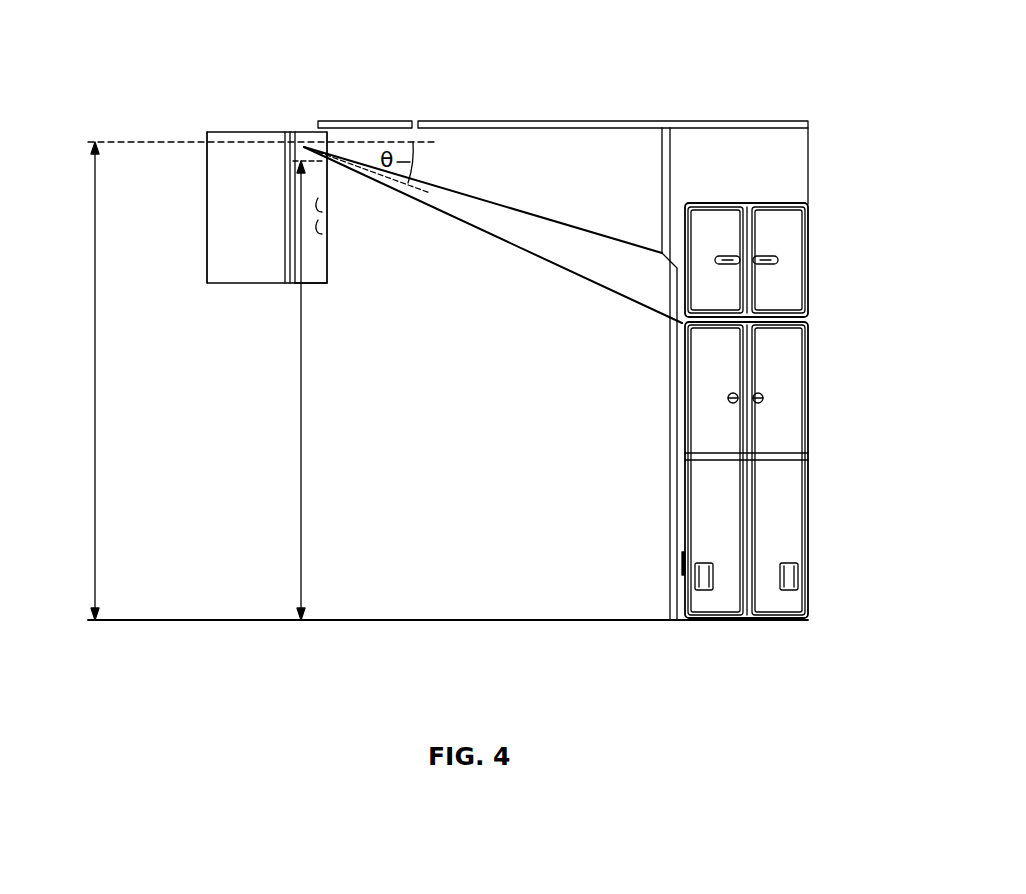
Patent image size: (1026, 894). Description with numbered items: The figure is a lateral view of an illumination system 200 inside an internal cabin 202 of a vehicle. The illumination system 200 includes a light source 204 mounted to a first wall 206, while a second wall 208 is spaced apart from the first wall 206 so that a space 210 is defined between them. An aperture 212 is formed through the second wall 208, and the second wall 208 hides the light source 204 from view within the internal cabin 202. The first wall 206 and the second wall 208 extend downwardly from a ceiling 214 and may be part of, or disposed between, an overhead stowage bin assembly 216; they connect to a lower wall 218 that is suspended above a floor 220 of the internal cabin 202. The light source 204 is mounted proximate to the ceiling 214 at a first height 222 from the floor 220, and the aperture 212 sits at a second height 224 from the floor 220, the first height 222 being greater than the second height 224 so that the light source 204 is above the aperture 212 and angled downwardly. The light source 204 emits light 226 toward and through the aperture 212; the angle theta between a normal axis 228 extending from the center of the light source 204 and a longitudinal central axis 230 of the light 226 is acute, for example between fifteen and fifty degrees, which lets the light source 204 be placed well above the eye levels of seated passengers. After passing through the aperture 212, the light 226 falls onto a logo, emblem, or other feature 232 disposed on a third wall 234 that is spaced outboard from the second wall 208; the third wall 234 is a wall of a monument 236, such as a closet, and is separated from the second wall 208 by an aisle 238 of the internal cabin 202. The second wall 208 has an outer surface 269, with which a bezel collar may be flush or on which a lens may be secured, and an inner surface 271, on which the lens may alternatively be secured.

The illumination system 200 is at (271, 227).
The internal cabin 202 is at (368, 596).
The light source 204 is at (300, 147).
The first wall 206 is at (283, 257).
The second wall 208 is at (327, 258).
The space 210 is at (308, 257).
The aperture 212 is at (330, 156).
The ceiling 214 is at (437, 121).
The overhead stowage bin assembly 216 is at (196, 283).
The lower wall 218 is at (317, 287).
The floor 220 is at (490, 620).
The first height 222 is at (95, 448).
The second height 224 is at (300, 448).
The light 226 is at (321, 156).
The normal axis 228 is at (393, 142).
The longitudinal central axis 230 is at (425, 192).
The feature 232 is at (667, 297).
The third wall 234 is at (668, 418).
The monument 236 is at (785, 340).
The aisle 238 is at (445, 599).
The outer surface 269 is at (322, 212).
The inner surface 271 is at (322, 234).